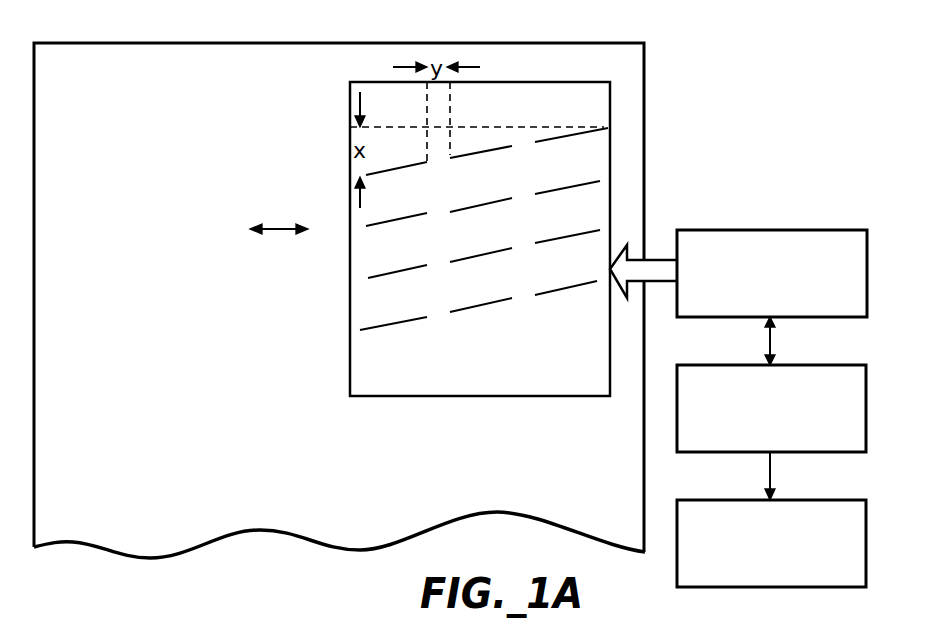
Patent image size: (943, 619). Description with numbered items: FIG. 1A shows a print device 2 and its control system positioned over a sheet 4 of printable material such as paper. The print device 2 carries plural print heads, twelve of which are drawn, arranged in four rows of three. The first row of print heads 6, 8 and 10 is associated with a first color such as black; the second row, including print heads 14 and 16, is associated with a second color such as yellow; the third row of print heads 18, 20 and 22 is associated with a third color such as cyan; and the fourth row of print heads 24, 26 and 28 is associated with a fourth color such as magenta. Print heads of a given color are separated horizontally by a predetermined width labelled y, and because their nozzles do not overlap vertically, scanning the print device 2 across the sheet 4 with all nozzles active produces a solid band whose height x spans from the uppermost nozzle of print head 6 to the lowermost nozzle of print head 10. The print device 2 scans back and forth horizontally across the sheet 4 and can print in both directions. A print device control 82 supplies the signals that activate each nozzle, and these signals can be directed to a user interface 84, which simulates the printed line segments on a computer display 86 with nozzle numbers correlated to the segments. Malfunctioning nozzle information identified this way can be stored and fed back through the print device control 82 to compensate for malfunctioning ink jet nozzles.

The print device 2 is at (356, 129).
The sheet 4 is at (648, 158).
The print head 6 is at (548, 139).
The print head 8 is at (457, 156).
The print head 10 is at (373, 173).
The print head 14 is at (459, 210).
The print head 16 is at (373, 224).
The print head 18 is at (548, 240).
The print head 20 is at (459, 260).
The print head 22 is at (374, 276).
The print head 24 is at (548, 292).
The print head 26 is at (459, 310).
The print head 28 is at (372, 327).
The print device control 82 is at (797, 230).
The user interface 84 is at (797, 365).
The display 86 is at (797, 500).